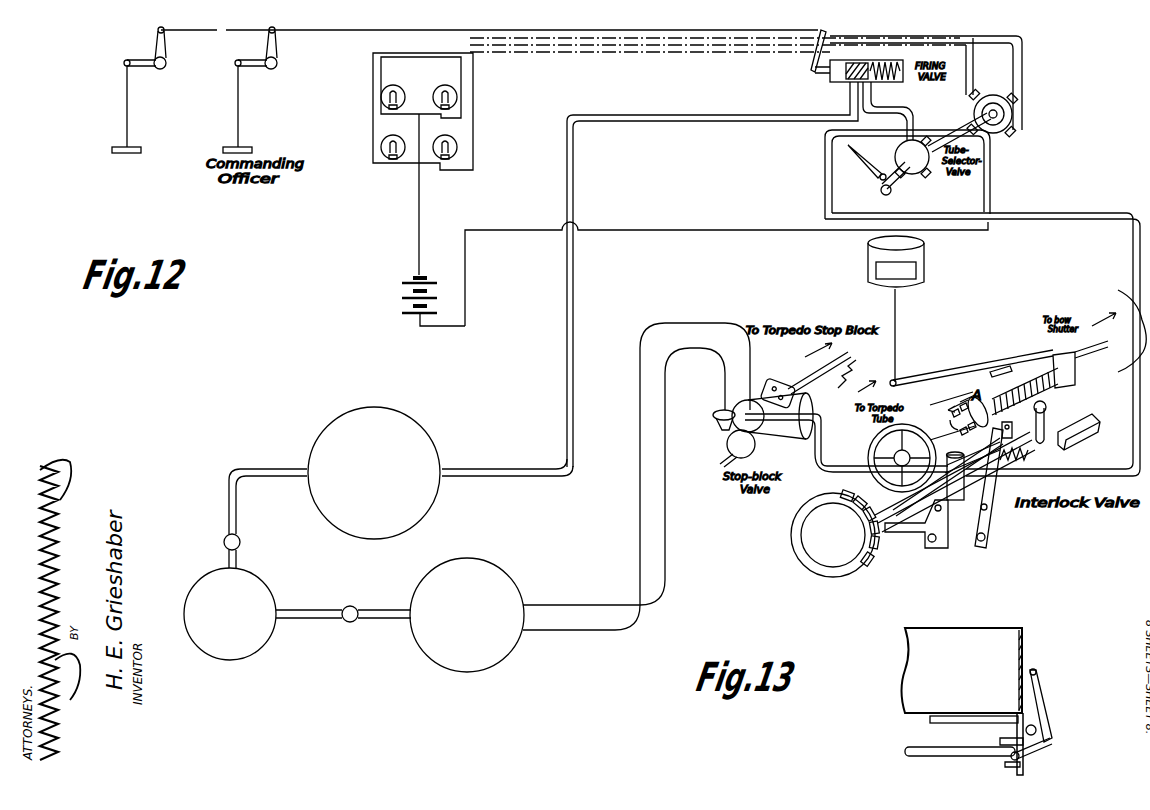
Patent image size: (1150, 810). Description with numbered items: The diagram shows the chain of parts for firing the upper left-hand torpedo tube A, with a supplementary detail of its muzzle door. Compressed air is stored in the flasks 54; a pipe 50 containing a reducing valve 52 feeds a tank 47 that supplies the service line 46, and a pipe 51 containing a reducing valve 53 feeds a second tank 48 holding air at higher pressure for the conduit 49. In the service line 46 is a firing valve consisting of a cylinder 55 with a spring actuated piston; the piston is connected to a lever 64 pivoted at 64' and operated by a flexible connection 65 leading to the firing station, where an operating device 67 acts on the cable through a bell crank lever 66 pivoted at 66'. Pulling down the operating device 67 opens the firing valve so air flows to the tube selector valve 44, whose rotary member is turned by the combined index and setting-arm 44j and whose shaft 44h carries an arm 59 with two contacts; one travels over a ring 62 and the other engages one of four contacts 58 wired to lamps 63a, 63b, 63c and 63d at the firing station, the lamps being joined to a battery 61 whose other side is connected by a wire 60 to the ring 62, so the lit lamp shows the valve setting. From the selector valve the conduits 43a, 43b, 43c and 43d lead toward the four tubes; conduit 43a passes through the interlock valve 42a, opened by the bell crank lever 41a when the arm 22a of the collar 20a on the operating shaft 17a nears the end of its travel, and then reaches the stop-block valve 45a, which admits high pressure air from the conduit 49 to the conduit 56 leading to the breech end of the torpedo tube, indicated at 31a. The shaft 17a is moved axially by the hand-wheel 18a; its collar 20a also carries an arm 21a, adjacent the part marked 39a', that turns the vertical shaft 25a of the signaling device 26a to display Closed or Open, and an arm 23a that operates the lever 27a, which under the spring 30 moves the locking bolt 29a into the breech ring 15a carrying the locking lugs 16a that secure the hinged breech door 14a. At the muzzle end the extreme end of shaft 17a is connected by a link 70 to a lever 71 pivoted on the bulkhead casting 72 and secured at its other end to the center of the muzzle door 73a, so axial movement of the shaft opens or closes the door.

In FIG. 12, the bell crank lever 66 is at (215, 48).
In FIG. 12, the pivot of bell crank lever 66' is at (209, 70).
In FIG. 12, the operating device 67 is at (189, 109).
In FIG. 12, the flexible connection 65 is at (364, 32).
In FIG. 12, the lamp 63a is at (395, 86).
In FIG. 12, the lamp 63b is at (440, 90).
In FIG. 12, the lamp 63c is at (387, 160).
In FIG. 12, the lamp 63d is at (458, 146).
In FIG. 12, the battery 61 is at (400, 290).
In FIG. 12, the wire 60 is at (675, 231).
In FIG. 12, the pipe (service line) 46 is at (668, 118).
In FIG. 12, the tank 47 is at (385, 402).
In FIG. 12, the tank (source of compressed air) 48 is at (445, 658).
In FIG. 12, the conduit 49 is at (660, 555).
In FIG. 12, the pipe 50 is at (250, 476).
In FIG. 12, the pipe 51 is at (286, 612).
In FIG. 12, the reducing valve 52 is at (241, 540).
In FIG. 12, the reducing valve 53 is at (358, 608).
In FIG. 12, the compressed air flasks 54 is at (255, 648).
In FIG. 12, the firing valve cylinder 55 is at (834, 83).
In FIG. 12, the lever 64 is at (812, 82).
In FIG. 12, the pivot of lever 64' is at (800, 52).
In FIG. 12, the arm 59 is at (984, 94).
In FIG. 12, the contacts 58 is at (1013, 100).
In FIG. 12, the ring 62 is at (1002, 128).
In FIG. 12, the conduit 43a is at (827, 148).
In FIG. 12, the conduit 43b is at (918, 140).
In FIG. 12, the conduit 43c is at (902, 180).
In FIG. 12, the conduit 43d is at (930, 180).
In FIG. 12, the tube selector valve 44 is at (897, 157).
In FIG. 12, the combined index and setting-arm 44j is at (872, 176).
In FIG. 12, the shaft 44h is at (945, 130).
In FIG. 12, the stop-block valve 45a is at (728, 450).
In FIG. 12, the conduit 56 is at (856, 374).
In FIG. 12, the signaling device 26a is at (928, 274).
In FIG. 12, the vertical shaft 25a is at (900, 340).
In FIG. 12, the operating shaft 17a is at (1124, 322).
In FIG. 13, the operating shaft 17a is at (905, 752).
In FIG. 12, the gear segment 39a' is at (986, 384).
In FIG. 12, the arm 21a is at (1030, 360).
In FIG. 12, the collar 20a is at (1076, 372).
In FIG. 12, the arm 22a is at (1062, 401).
In FIG. 12, the lever 27a is at (1092, 433).
In FIG. 12, the arm 23a is at (1042, 450).
In FIG. 12, the bell crank lever 41a is at (1025, 458).
In FIG. 12, the torpedo tube 31a is at (935, 420).
In FIG. 12, the hand-wheel 18a is at (872, 445).
In FIG. 12, the breech ring 15a is at (800, 572).
In FIG. 12, the breech door 14a is at (842, 555).
In FIG. 12, the locking lugs or segments 16a is at (870, 568).
In FIG. 12, the locking bolt 29a is at (915, 540).
In FIG. 12, the interlock valve 42a is at (990, 500).
In FIG. 12, the spring 30 is at (1049, 476).
In FIG. 13, the muzzle door 73a is at (1023, 635).
In FIG. 13, the bulkhead casting 72 is at (930, 720).
In FIG. 13, the lever 71 is at (1052, 731).
In FIG. 13, the link 70 is at (1038, 757).